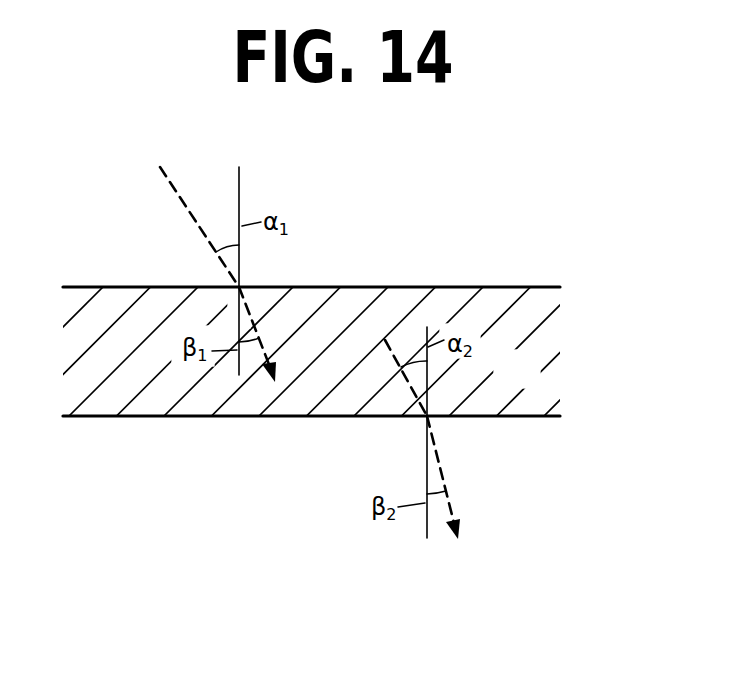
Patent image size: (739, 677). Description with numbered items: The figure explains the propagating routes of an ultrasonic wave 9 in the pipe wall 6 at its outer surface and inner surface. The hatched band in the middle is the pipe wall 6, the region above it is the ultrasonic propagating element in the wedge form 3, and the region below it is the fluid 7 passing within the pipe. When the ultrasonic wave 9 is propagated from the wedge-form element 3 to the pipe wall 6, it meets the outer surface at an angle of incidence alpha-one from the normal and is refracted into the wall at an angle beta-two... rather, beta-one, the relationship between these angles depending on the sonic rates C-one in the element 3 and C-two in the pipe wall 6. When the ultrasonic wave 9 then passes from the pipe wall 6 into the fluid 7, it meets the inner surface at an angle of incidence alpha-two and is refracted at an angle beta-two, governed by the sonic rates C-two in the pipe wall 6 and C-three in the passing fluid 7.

The ultrasonic propagating element in the wedge form 3 is at (558, 251).
The pipe wall 6 is at (548, 339).
The fluid 7 is at (548, 471).
The ultrasonic wave 9 is at (181, 203).